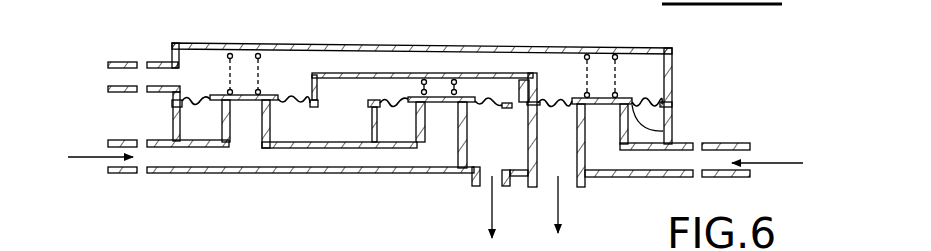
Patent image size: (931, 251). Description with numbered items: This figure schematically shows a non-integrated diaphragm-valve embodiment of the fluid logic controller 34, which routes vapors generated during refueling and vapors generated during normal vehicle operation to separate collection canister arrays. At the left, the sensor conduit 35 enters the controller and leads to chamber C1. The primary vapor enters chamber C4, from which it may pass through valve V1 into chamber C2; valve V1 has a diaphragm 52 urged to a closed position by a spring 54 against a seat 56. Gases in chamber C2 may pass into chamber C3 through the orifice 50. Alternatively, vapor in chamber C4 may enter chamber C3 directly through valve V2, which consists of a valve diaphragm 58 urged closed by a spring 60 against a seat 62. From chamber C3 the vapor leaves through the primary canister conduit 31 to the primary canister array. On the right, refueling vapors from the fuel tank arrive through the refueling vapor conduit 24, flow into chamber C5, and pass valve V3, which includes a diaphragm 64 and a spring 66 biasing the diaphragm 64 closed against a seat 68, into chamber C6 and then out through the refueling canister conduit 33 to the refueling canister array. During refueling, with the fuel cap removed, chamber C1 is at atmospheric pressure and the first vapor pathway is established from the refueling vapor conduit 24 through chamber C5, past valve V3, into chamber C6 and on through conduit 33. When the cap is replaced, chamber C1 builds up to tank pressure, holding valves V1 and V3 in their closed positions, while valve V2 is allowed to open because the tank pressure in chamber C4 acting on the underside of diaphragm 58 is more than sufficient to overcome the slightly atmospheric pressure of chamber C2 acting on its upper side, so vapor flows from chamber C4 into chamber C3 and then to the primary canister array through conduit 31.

The refueling vapor conduit 24 is at (742, 143).
The primary canister conduit 31 is at (477, 182).
The refueling canister conduit 33 is at (580, 187).
The fluid logic controller 34 is at (99, 29).
The sensor conduit 35 is at (108, 60).
The orifice 50 is at (518, 80).
The diaphragm 52 is at (243, 94).
The spring 54 is at (230, 53).
The seat 56 is at (263, 108).
The valve diaphragm 58 is at (458, 93).
The spring 60 is at (423, 73).
The seat 62 is at (428, 108).
The diaphragm 64 is at (630, 107).
The spring 66 is at (625, 52).
The seat 68 is at (672, 132).
The chamber C1 is at (212, 86).
The chamber C2 is at (317, 138).
The chamber C3 is at (512, 148).
The chamber C4 is at (213, 157).
The chamber C5 is at (605, 155).
The chamber C6 is at (648, 117).
The valve V1 is at (242, 81).
The valve V2 is at (444, 96).
The valve V3 is at (597, 93).